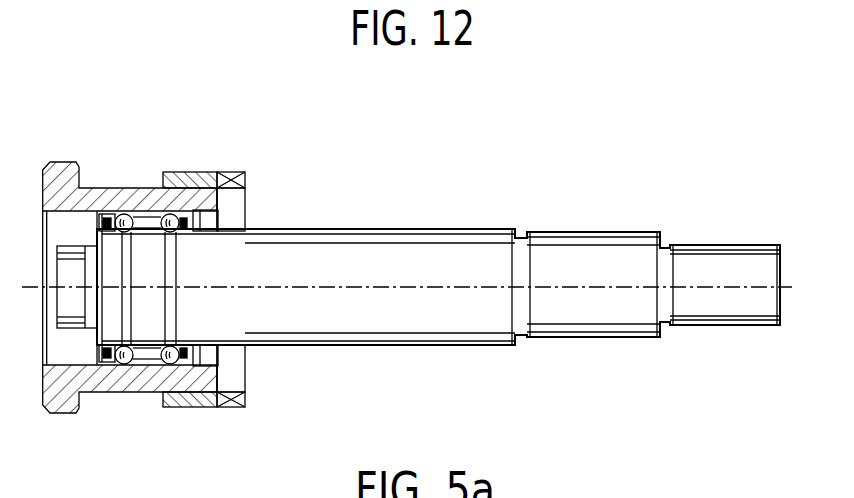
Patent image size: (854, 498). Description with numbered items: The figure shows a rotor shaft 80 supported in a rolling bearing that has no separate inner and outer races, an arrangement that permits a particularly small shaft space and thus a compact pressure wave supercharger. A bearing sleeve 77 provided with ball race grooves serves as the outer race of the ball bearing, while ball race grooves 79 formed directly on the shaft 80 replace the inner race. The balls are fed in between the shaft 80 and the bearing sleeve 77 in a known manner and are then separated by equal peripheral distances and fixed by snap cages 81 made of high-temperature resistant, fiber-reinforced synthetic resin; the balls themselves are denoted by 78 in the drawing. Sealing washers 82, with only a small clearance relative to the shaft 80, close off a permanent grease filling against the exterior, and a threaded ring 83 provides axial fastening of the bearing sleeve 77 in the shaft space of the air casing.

The bearing sleeve 77 is at (116, 376).
The ball bearing 78 is at (173, 214).
The ball race grooves 79 is at (172, 318).
The shaft 80 is at (352, 346).
The snap cages 81 is at (182, 407).
The sealing washers 82 is at (95, 222).
The threaded ring 83 is at (208, 407).